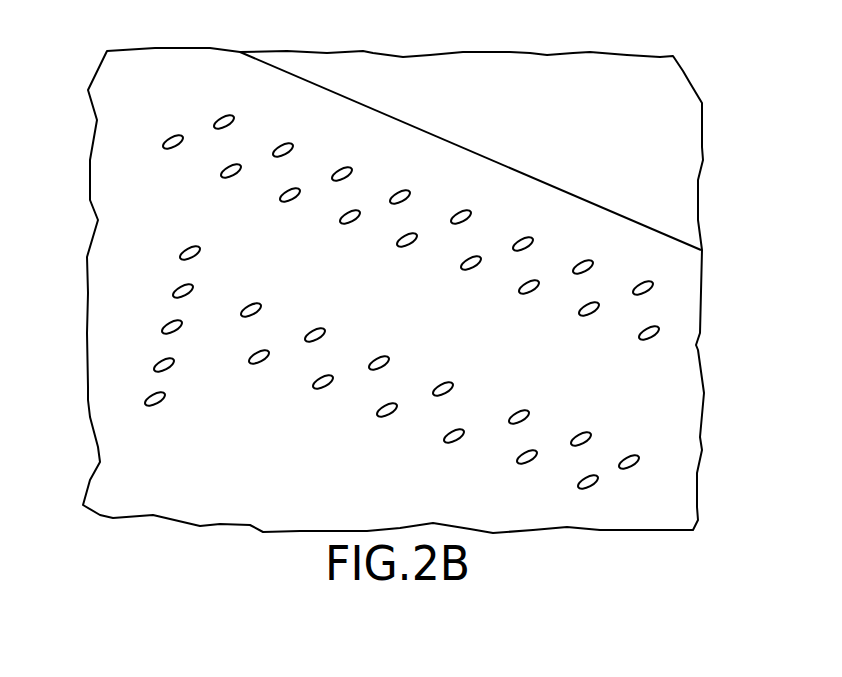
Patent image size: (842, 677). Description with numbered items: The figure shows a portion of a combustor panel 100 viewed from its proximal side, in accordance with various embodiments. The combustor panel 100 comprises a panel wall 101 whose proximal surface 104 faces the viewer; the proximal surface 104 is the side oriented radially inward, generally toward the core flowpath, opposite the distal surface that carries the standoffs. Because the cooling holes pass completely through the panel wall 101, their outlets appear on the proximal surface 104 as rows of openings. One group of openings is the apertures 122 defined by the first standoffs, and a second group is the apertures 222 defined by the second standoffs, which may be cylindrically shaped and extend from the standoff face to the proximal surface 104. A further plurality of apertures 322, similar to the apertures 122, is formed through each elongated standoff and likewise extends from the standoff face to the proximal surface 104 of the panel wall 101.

The combustor panel 100 is at (76, 68).
The panel wall 101 is at (480, 193).
The proximal surface 104 is at (239, 477).
The aperture 122 is at (456, 263).
The aperture 222 is at (436, 433).
The apertures 322 is at (174, 281).